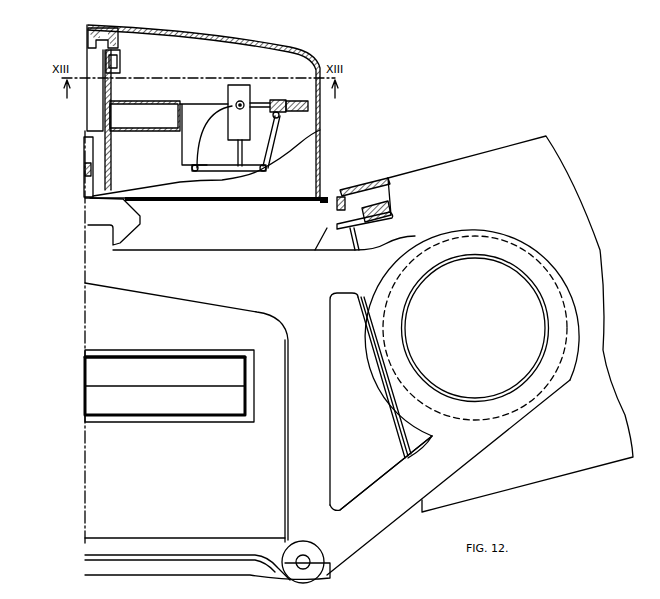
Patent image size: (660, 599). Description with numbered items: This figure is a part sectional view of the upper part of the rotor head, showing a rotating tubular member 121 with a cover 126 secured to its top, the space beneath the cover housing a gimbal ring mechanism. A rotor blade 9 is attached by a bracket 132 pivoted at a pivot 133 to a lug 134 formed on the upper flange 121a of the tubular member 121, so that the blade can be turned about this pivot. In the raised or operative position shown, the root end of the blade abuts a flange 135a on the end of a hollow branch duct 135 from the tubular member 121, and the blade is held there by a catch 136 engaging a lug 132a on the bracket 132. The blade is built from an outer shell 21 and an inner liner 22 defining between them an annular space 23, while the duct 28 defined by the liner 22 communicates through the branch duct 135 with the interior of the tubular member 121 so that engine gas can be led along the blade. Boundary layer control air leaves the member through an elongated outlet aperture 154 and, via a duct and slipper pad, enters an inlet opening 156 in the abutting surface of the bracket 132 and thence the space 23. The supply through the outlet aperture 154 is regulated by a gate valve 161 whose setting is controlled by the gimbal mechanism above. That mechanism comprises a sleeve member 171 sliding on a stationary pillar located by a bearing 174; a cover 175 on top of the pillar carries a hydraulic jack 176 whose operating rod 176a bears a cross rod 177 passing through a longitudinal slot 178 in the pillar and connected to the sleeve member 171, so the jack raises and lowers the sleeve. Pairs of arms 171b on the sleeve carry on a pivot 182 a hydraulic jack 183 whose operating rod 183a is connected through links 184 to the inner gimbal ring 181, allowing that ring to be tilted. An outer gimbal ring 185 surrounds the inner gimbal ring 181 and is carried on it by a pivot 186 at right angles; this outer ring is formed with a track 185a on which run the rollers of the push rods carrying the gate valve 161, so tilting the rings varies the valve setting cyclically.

The rotor blade 9 is at (452, 163).
The outer shell 21 is at (365, 185).
The inner liner 22 is at (386, 212).
The annular space 23 is at (358, 200).
The duct 28 is at (366, 224).
The tubular member 121 is at (186, 411).
The upper flange 121a is at (186, 545).
The cover 126 is at (248, 46).
The bracket 132 is at (395, 518).
The lug 132a is at (88, 248).
The pivot 133 is at (310, 556).
The lug 134 is at (268, 562).
The branch duct 135 is at (381, 401).
The flange 135a is at (345, 221).
The catch 136 is at (88, 217).
The outlet aperture 154 is at (169, 386).
The inlet opening 156 is at (475, 328).
The gate valve 161 is at (146, 368).
The sleeve member 171 is at (145, 116).
The arms 171b is at (206, 136).
The bearing 174 is at (120, 68).
The cover 175 is at (113, 45).
The hydraulic jack 176 is at (86, 124).
The operating rod 176a is at (84, 149).
The cross rod 177 is at (85, 170).
The longitudinal slot 178 is at (90, 190).
The inner gimbal ring 181 is at (266, 101).
The pivot 182 is at (236, 104).
The hydraulic jack 183 is at (240, 88).
The operating rod 183a is at (227, 153).
The links 184 is at (278, 172).
The outer gimbal ring 185 is at (293, 111).
The track 185a is at (302, 98).
The pivot 186 is at (278, 100).